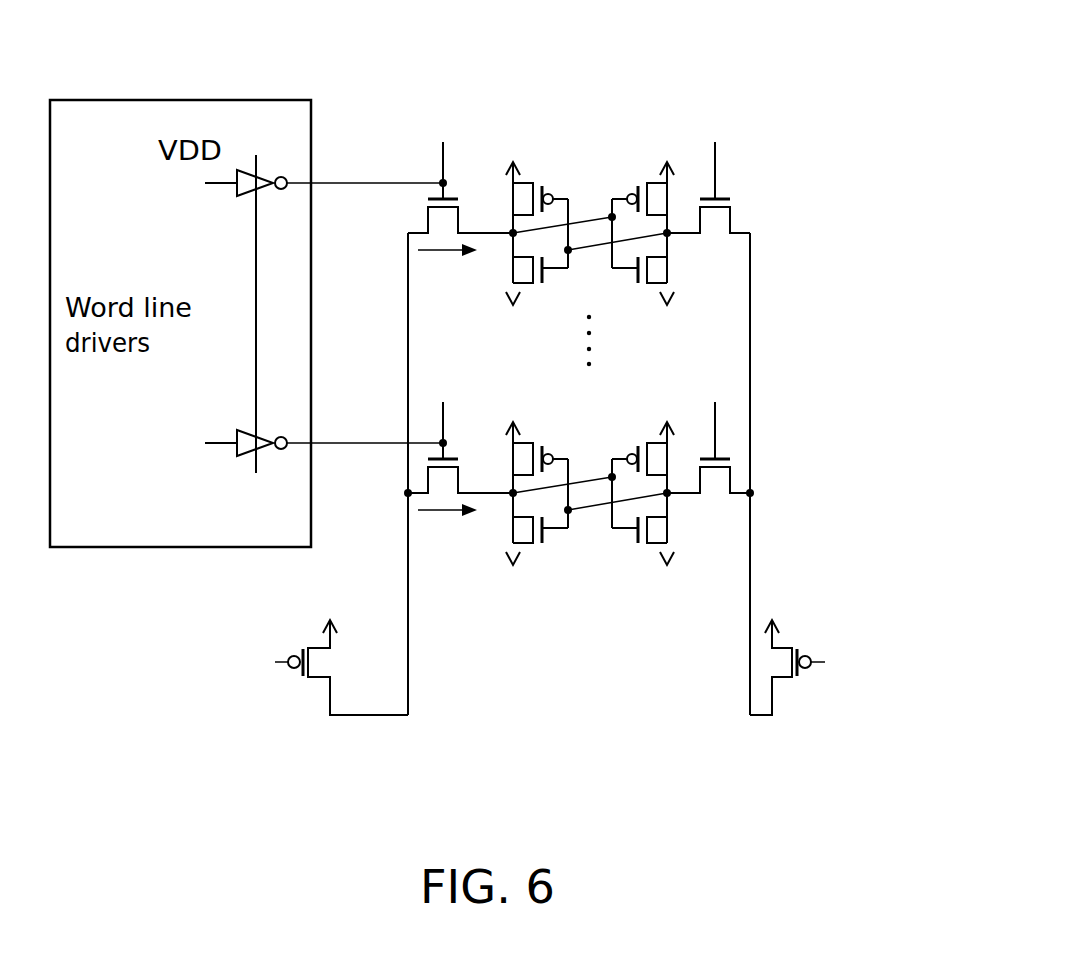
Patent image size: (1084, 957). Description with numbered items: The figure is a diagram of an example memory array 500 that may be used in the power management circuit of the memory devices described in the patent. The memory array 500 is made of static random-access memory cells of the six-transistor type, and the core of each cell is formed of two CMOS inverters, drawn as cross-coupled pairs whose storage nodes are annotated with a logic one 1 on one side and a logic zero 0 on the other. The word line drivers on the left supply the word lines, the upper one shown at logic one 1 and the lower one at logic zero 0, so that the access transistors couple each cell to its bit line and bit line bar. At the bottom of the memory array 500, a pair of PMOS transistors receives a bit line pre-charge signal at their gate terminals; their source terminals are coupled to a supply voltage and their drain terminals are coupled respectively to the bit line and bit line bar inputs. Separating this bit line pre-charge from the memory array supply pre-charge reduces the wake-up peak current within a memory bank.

The memory array 500 is at (712, 47).
The word line driver output (WLTOP) at logic 1 is at (324, 175).
The word line driver output (WL0) at logic 0 is at (324, 447).